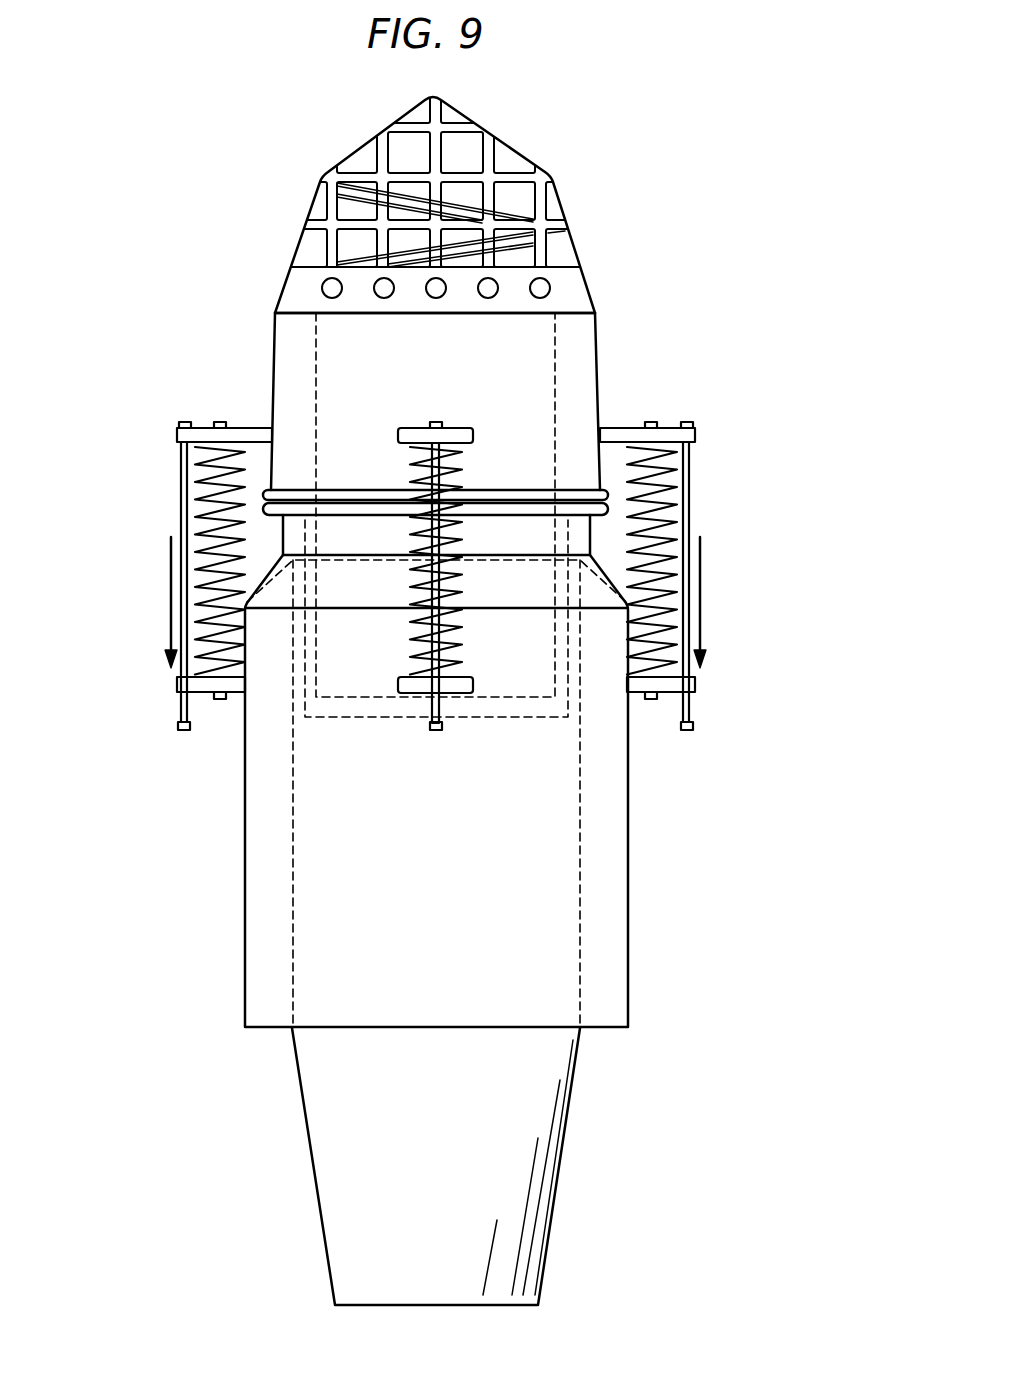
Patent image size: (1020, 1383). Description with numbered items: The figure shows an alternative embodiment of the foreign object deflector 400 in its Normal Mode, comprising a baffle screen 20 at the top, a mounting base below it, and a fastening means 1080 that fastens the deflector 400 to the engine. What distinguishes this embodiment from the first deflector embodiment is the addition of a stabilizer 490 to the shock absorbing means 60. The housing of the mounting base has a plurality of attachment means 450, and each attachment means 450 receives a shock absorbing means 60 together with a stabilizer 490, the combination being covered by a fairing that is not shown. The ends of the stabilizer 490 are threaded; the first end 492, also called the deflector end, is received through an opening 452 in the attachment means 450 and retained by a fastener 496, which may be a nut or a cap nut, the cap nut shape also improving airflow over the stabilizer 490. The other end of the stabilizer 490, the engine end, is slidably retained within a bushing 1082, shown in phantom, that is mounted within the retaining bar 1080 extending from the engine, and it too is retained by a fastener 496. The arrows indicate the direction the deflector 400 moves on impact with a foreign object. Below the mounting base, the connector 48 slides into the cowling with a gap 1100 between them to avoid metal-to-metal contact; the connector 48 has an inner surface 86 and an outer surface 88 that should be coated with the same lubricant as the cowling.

The baffle screen 20 is at (520, 152).
The foreign object deflector 400 is at (235, 330).
The attachment means 450 is at (248, 428).
The opening 452 is at (693, 427).
The first end of stabilizer 492 is at (692, 448).
The shock absorbing means 60 is at (610, 495).
The outer surface of connector 88 is at (593, 538).
The connector 48 is at (535, 548).
The inner surface of connector 86 is at (543, 610).
The stabilizer 490 is at (700, 660).
The fastener 496 is at (690, 732).
The gap 1100 is at (578, 717).
The retaining bar 1080 is at (177, 437).
The bushing 1082 is at (180, 683).